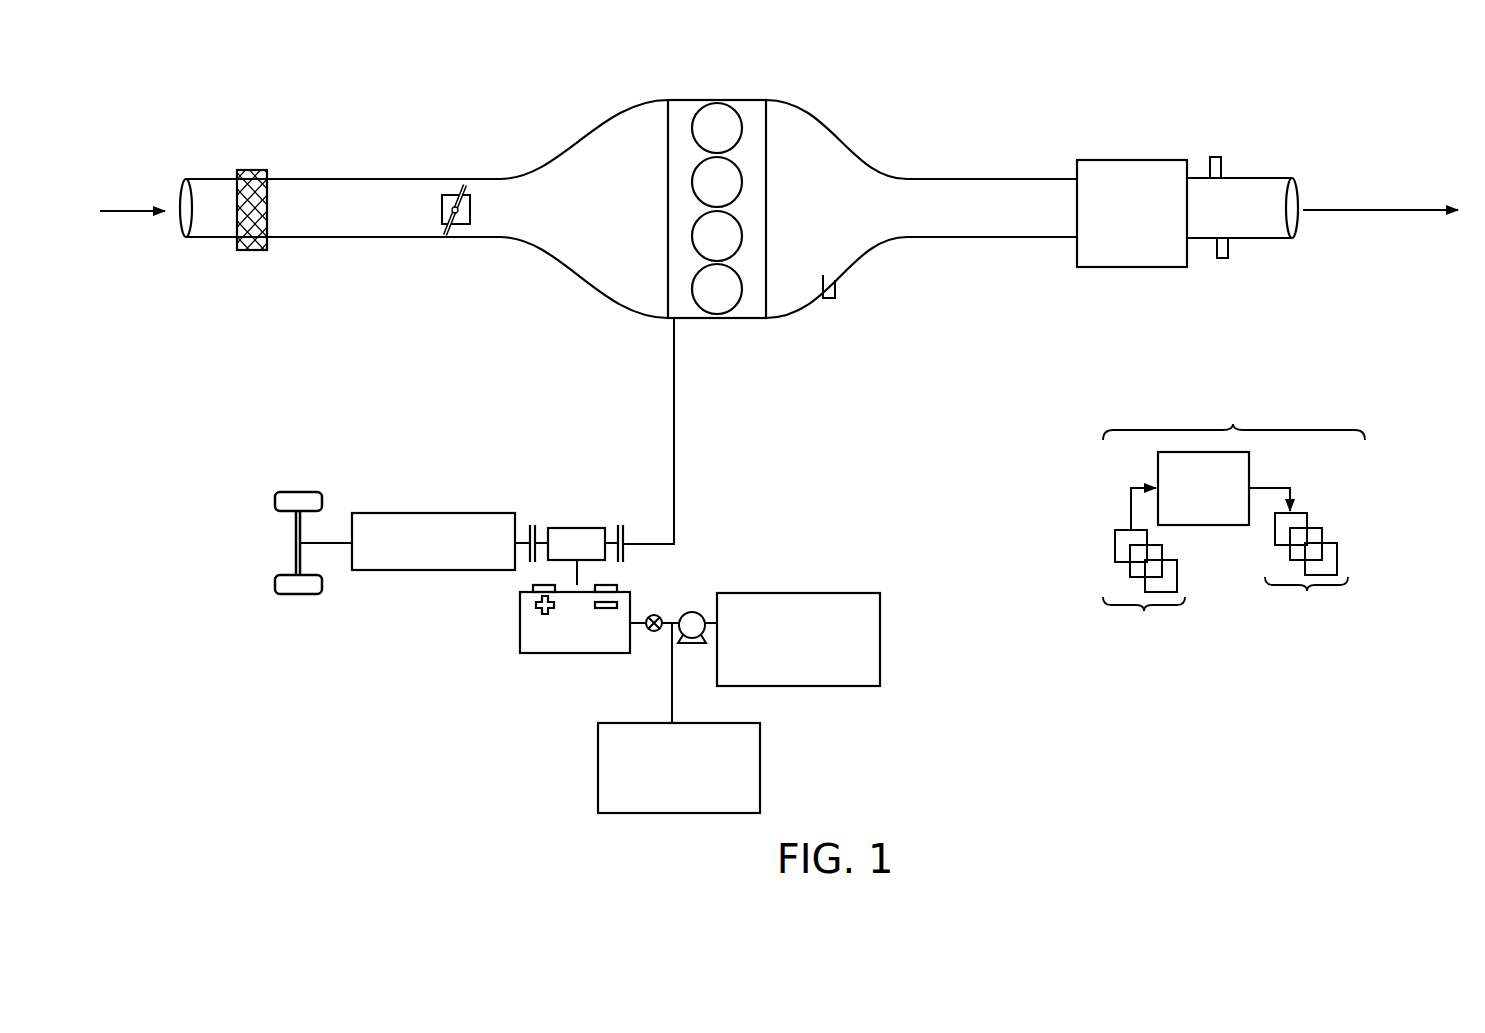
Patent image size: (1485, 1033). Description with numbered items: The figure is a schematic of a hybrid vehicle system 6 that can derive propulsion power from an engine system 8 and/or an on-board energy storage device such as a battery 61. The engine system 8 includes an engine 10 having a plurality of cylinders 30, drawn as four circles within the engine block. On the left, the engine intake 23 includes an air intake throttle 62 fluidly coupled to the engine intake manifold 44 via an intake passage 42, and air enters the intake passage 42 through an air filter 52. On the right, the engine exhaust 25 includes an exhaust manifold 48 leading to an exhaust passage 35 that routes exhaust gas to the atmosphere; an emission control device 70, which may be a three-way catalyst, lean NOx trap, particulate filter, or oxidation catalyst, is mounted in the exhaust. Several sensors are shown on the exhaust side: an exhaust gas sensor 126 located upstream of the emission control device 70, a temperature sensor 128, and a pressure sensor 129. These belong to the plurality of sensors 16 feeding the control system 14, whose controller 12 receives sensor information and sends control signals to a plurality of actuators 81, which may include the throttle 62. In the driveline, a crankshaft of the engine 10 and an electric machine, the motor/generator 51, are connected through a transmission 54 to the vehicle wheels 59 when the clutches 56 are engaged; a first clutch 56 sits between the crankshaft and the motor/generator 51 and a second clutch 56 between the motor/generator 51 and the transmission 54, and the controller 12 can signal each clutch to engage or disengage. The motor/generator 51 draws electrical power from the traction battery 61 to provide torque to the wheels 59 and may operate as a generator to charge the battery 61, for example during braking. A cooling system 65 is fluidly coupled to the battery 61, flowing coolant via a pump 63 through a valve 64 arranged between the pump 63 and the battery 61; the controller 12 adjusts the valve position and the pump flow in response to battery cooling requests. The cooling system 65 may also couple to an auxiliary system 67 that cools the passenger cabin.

The hybrid vehicle system 6 is at (205, 82).
The engine system 8 is at (1322, 75).
The engine 10 is at (767, 188).
The controller 12 is at (1203, 488).
The control system 14 is at (1234, 409).
The sensors 16 is at (1144, 572).
The engine intake 23 is at (592, 130).
The engine exhaust 25 is at (882, 140).
The cylinders 30 is at (741, 120).
The exhaust passage 35 is at (1268, 177).
The intake passage 42 is at (215, 238).
The engine intake manifold 44 is at (613, 219).
The exhaust manifold 48 is at (835, 219).
The motor/generator 51 is at (580, 527).
The air filter 52 is at (250, 169).
The transmission 54 is at (375, 569).
The clutches 56 is at (538, 524).
The vehicle wheels 59 is at (298, 597).
The battery 61 is at (583, 653).
The air intake throttle 62 is at (472, 222).
The pump 63 is at (692, 644).
The valve 64 is at (653, 633).
The cooling system 65 is at (753, 687).
The auxiliary system 67 is at (633, 813).
The emission control device 70 is at (1120, 159).
The actuators 81 is at (1300, 562).
The exhaust gas sensor 126 is at (836, 278).
The temperature sensor 128 is at (1222, 258).
The pressure sensor 129 is at (1214, 157).